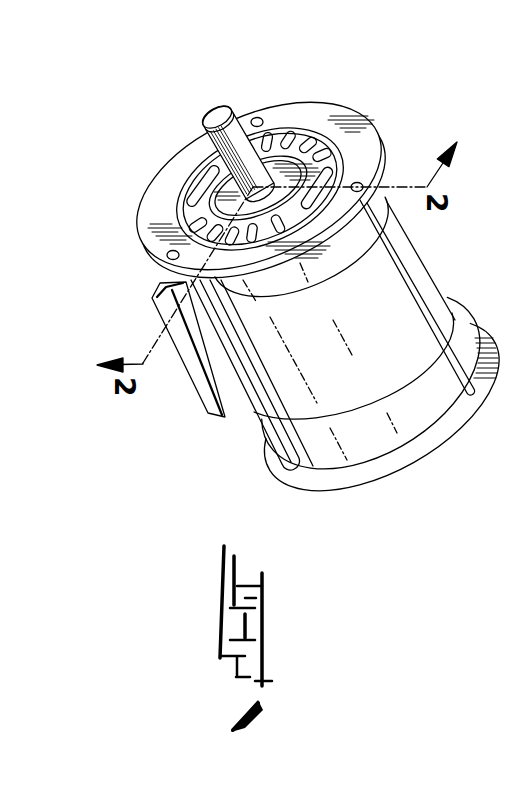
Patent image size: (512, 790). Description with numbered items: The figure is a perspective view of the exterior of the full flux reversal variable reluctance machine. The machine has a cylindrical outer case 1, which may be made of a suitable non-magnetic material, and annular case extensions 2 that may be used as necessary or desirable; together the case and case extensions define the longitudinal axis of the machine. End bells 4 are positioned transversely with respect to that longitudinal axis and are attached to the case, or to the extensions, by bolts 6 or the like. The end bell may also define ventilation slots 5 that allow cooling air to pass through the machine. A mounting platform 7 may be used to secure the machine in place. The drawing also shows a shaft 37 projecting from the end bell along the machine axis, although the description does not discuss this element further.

The dynamoelectric machine 1 is at (311, 267).
The housing shell 2 is at (342, 257).
The end plate 4 is at (315, 112).
The ventilation slot 5 is at (290, 135).
The tie bar 6 is at (270, 431).
The mounting bracket 7 is at (212, 377).
The shaft 37 is at (260, 191).